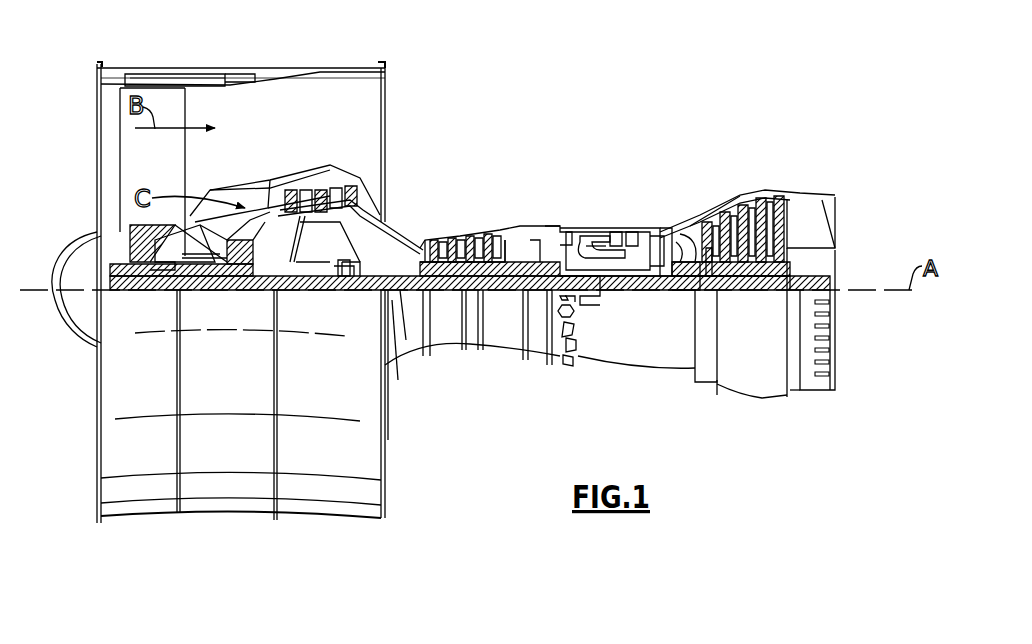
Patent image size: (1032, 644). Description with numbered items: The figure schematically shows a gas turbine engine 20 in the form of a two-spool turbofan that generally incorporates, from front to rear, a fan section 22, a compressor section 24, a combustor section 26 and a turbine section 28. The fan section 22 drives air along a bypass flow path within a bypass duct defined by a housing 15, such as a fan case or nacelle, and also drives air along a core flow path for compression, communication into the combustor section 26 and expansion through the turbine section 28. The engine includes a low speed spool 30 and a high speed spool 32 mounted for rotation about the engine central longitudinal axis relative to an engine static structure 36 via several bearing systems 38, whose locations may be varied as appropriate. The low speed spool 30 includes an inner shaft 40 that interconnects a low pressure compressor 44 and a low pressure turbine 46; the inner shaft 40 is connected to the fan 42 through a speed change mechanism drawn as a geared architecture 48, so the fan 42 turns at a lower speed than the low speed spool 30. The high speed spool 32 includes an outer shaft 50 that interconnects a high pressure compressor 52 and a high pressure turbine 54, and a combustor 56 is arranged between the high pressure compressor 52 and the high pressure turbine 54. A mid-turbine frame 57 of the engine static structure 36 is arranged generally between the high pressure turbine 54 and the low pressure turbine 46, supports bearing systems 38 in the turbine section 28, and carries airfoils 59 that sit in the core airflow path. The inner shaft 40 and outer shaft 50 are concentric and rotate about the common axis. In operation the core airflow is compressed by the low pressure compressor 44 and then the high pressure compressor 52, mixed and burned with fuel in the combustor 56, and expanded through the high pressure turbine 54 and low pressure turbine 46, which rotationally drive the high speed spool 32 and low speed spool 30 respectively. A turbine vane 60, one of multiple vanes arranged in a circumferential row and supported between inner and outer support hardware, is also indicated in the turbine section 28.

The gas turbine engine 20 is at (600, 105).
The fan section 22 is at (187, 62).
The housing 15 is at (240, 82).
The compressor section 24 is at (419, 216).
The combustor section 26 is at (595, 216).
The turbine section 28 is at (721, 174).
The low speed spool 30 is at (505, 300).
The high speed spool 32 is at (538, 242).
The engine static structure 36 is at (534, 353).
The bearing systems 38 is at (344, 277).
The inner shaft 40 is at (403, 297).
The fan 42 is at (152, 131).
The low pressure compressor 44 is at (320, 216).
The low pressure turbine 46 is at (738, 196).
The geared architecture 48 is at (242, 278).
The outer shaft 50 is at (604, 293).
The high pressure compressor 52 is at (485, 238).
The high pressure turbine 54 is at (646, 232).
The combustor 56 is at (600, 240).
The mid-turbine frame 57 is at (688, 218).
The airfoils 59 is at (710, 265).
The turbine vane 60 is at (708, 188).